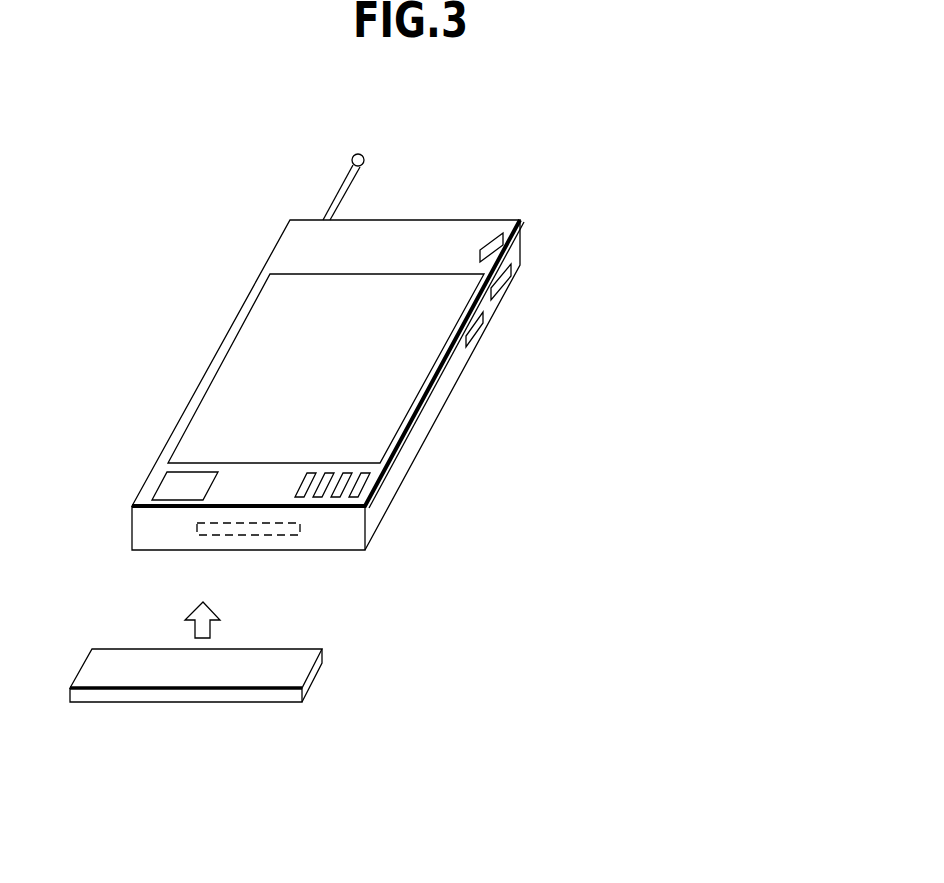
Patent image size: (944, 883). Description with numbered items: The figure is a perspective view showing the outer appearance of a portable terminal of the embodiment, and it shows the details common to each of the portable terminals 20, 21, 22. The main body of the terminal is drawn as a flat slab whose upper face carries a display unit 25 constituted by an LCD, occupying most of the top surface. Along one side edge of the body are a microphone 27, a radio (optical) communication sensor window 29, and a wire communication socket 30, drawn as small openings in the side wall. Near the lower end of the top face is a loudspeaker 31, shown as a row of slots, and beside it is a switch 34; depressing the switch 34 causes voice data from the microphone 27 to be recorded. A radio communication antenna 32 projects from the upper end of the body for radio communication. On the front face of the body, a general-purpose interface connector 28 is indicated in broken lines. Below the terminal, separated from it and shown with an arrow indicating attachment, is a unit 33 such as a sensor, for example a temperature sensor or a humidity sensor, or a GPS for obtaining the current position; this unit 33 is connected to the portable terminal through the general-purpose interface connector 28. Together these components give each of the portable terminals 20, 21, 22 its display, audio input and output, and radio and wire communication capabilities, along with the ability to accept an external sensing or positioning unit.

The portable terminal 20 is at (392, 340).
The portable terminal 21 is at (392, 340).
The portable terminal 22 is at (442, 228).
The display unit 25 is at (283, 377).
The microphone 27 is at (495, 243).
The general-purpose interface connector 28 is at (278, 530).
The radio communication sensor window 29 is at (503, 283).
The wire communication socket 30 is at (477, 330).
The loudspeaker 31 is at (373, 483).
The radio communication antenna 32 is at (333, 197).
The unit 33 is at (272, 698).
The switch 34 is at (167, 490).